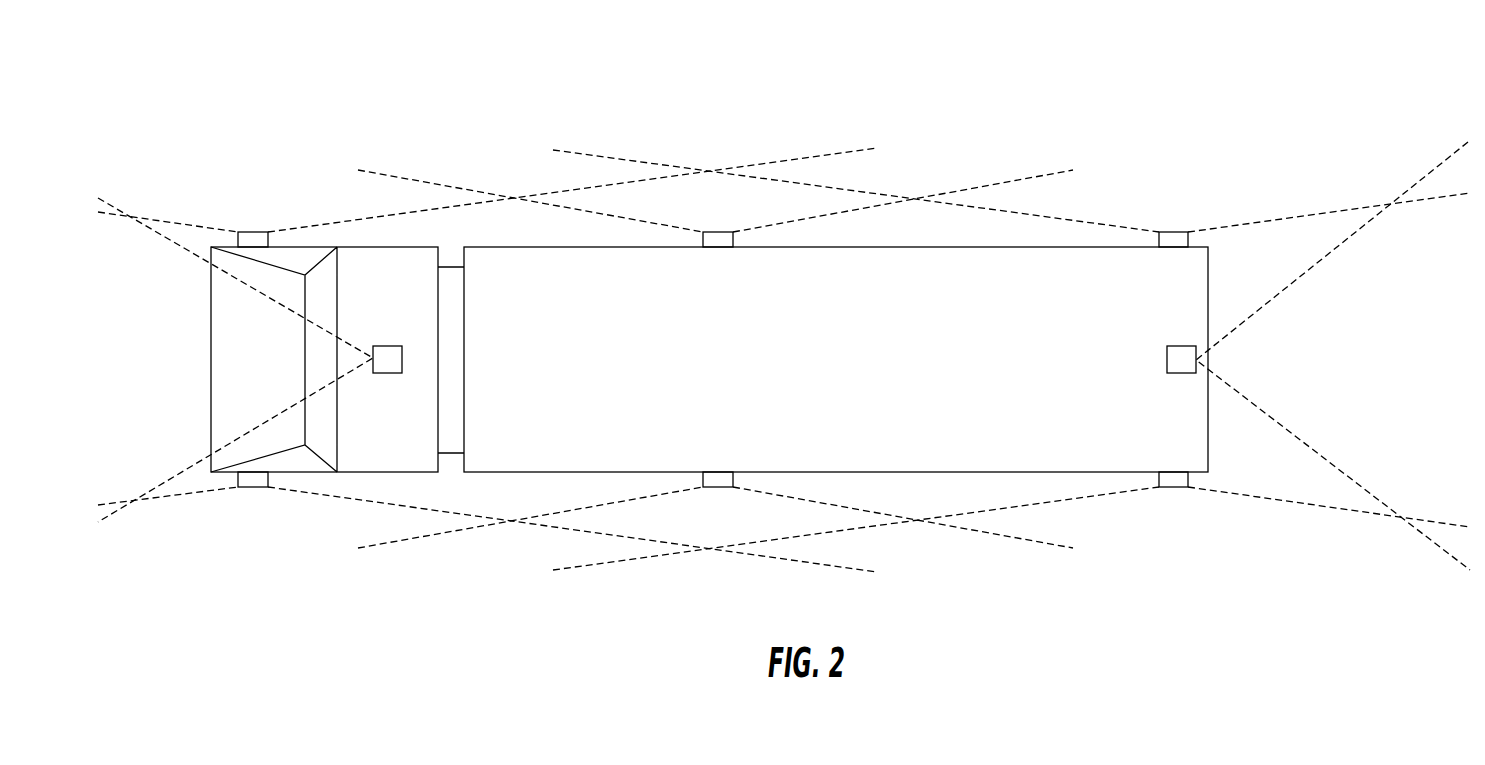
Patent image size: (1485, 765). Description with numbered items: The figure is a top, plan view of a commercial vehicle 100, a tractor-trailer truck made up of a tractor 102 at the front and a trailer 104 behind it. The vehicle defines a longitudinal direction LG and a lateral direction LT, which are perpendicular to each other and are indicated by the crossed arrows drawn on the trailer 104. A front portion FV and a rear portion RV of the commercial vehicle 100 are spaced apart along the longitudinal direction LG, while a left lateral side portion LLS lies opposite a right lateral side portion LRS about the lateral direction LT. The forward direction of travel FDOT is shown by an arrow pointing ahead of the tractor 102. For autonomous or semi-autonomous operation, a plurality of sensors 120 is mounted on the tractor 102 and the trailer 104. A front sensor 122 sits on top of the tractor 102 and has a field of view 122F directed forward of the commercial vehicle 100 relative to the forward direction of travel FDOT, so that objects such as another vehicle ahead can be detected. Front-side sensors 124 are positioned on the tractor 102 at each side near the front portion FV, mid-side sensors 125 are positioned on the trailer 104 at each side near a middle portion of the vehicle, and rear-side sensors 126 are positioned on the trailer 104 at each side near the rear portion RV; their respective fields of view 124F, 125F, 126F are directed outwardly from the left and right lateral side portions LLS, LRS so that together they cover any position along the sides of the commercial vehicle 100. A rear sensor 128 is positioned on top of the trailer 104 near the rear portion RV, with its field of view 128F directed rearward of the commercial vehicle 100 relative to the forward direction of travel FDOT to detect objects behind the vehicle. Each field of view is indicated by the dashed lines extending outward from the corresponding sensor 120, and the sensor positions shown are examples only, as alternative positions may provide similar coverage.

The commercial vehicle 100 is at (238, 130).
The tractor 102 is at (232, 336).
The trailer 104 is at (932, 274).
The sensors 120 is at (716, 362).
The front sensor 122 is at (386, 357).
The front-side sensors 124 is at (249, 242).
The mid-side sensors 125 is at (717, 242).
The rear-side sensors 126 is at (1173, 242).
The rear sensor 128 is at (1183, 365).
The field of view of front sensor 122F is at (182, 250).
The field of view of front-side sensors 124F is at (333, 222).
The field of view of mid-side sensors 125F is at (985, 185).
The field of view of rear-side sensors 126F is at (1117, 222).
The field of view of rear sensor 128F is at (1340, 246).
The right lateral side portion LRS is at (703, 125).
The left lateral side portion LLS is at (686, 588).
The front portion FV is at (193, 361).
The rear portion RV is at (1226, 360).
The forward direction of travel FDOT is at (188, 432).
The lateral direction LT is at (602, 415).
The longitudinal direction LG is at (548, 360).